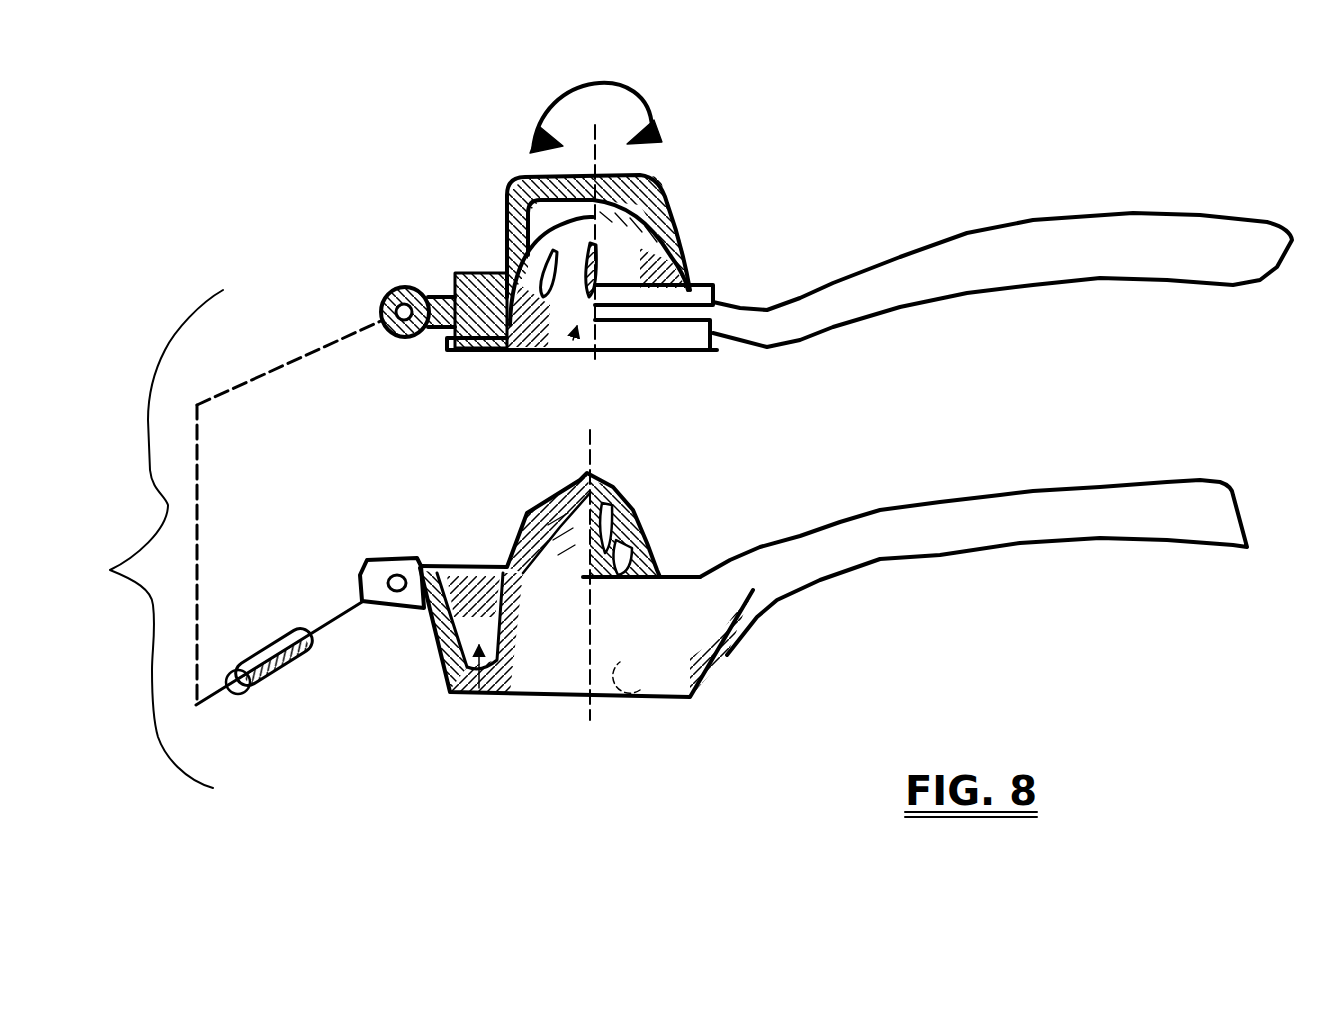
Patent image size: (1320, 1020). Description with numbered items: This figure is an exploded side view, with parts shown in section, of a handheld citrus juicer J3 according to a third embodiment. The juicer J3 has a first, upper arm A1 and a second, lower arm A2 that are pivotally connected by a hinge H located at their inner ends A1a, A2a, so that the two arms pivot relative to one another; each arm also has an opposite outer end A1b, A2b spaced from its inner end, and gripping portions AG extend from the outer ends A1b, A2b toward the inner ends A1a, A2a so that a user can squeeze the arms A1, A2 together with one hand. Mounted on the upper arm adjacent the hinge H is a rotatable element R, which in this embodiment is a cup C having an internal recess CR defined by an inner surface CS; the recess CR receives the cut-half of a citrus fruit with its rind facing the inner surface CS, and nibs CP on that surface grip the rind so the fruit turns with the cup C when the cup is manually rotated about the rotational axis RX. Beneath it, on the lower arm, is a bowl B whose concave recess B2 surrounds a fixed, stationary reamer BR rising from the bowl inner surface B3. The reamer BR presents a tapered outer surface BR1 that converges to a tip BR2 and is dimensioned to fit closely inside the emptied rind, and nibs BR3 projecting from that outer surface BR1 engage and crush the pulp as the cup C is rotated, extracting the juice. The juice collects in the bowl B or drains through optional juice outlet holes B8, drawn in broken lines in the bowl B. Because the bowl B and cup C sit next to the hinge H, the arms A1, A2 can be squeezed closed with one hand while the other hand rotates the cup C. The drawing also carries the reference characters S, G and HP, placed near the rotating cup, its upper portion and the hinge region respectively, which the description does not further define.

The rotation direction S is at (658, 118).
The rotational axis RX is at (595, 365).
The gasket / cover G is at (662, 192).
The rotatable element R is at (700, 266).
The nibs CP is at (569, 278).
The cup C is at (538, 360).
The internal recess CR is at (568, 357).
The inner surface CS is at (588, 360).
The first end of the first arm A1a is at (447, 294).
The first arm A1 is at (975, 287).
The second end of the first arm A1b is at (1208, 275).
The gripping portions AG is at (995, 228).
The hinge H is at (405, 342).
The hinge pin HP is at (279, 684).
The bowl B is at (482, 548).
The reamer BR is at (630, 493).
The tapered outer surface BR1 is at (636, 545).
The tip BR2 is at (594, 477).
The nibs BR3 is at (702, 555).
The second arm A2 is at (950, 512).
The first end of the second arm A2a is at (418, 637).
The second end of the second arm A2b is at (1187, 533).
The recess B2 is at (480, 690).
The inner surface B3 is at (500, 634).
The juice outlet holes B8 is at (633, 660).
The juicer J3 is at (724, 752).